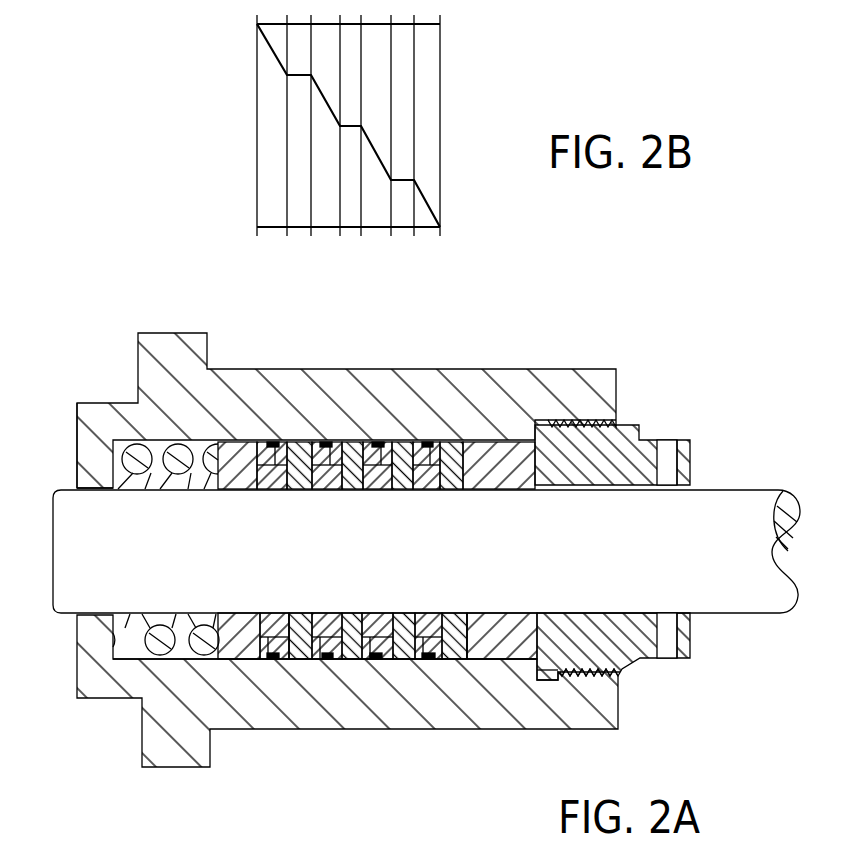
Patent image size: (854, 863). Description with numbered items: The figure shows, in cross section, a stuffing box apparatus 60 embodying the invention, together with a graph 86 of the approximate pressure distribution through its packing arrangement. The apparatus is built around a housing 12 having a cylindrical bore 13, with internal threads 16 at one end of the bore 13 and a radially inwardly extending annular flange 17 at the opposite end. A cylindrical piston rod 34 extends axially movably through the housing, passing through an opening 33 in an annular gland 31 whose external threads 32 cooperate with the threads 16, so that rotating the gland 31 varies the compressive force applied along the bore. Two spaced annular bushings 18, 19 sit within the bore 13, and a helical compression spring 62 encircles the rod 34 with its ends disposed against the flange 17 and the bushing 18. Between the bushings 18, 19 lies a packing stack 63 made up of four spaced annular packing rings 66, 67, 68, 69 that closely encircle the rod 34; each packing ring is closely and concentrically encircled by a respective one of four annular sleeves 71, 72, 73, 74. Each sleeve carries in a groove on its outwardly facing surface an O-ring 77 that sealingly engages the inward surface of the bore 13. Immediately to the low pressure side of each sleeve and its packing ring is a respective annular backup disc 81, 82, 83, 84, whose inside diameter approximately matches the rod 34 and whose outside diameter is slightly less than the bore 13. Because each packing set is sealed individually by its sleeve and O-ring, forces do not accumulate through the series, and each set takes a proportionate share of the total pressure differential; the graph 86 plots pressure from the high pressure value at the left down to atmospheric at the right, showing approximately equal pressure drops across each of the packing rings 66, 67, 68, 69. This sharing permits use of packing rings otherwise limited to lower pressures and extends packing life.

In FIG. 2A, the stuffing box apparatus 60 is at (76, 354).
In FIG. 2A, the housing 12 is at (76, 702).
In FIG. 2A, the bore 13 is at (185, 655).
In FIG. 2A, the annular flange 17 is at (88, 475).
In FIG. 2A, the internal threads 16 is at (602, 436).
In FIG. 2A, the bushing 18 is at (238, 645).
In FIG. 2A, the bushing 19 is at (505, 650).
In FIG. 2A, the gland 31 is at (640, 650).
In FIG. 2A, the external threads 32 is at (618, 428).
In FIG. 2A, the opening 33 is at (632, 488).
In FIG. 2A, the piston rod 34 is at (748, 510).
In FIG. 2A, the helical compression spring 62 is at (155, 652).
In FIG. 2A, the packing stack 63 is at (299, 668).
In FIG. 2A, the packing ring 66 is at (276, 485).
In FIG. 2A, the packing ring 67 is at (327, 485).
In FIG. 2A, the packing ring 68 is at (378, 485).
In FIG. 2A, the packing ring 69 is at (428, 485).
In FIG. 2A, the annular sleeve 71 is at (268, 652).
In FIG. 2A, the annular sleeve 72 is at (318, 660).
In FIG. 2A, the annular sleeve 73 is at (366, 657).
In FIG. 2A, the annular sleeve 74 is at (442, 660).
In FIG. 2A, the O-ring 77 is at (378, 660).
In FIG. 2A, the backup disc 81 is at (304, 625).
In FIG. 2A, the backup disc 82 is at (355, 625).
In FIG. 2A, the backup disc 83 is at (407, 625).
In FIG. 2A, the backup disc 84 is at (453, 625).
In FIG. 2B, the graph 86 is at (458, 101).